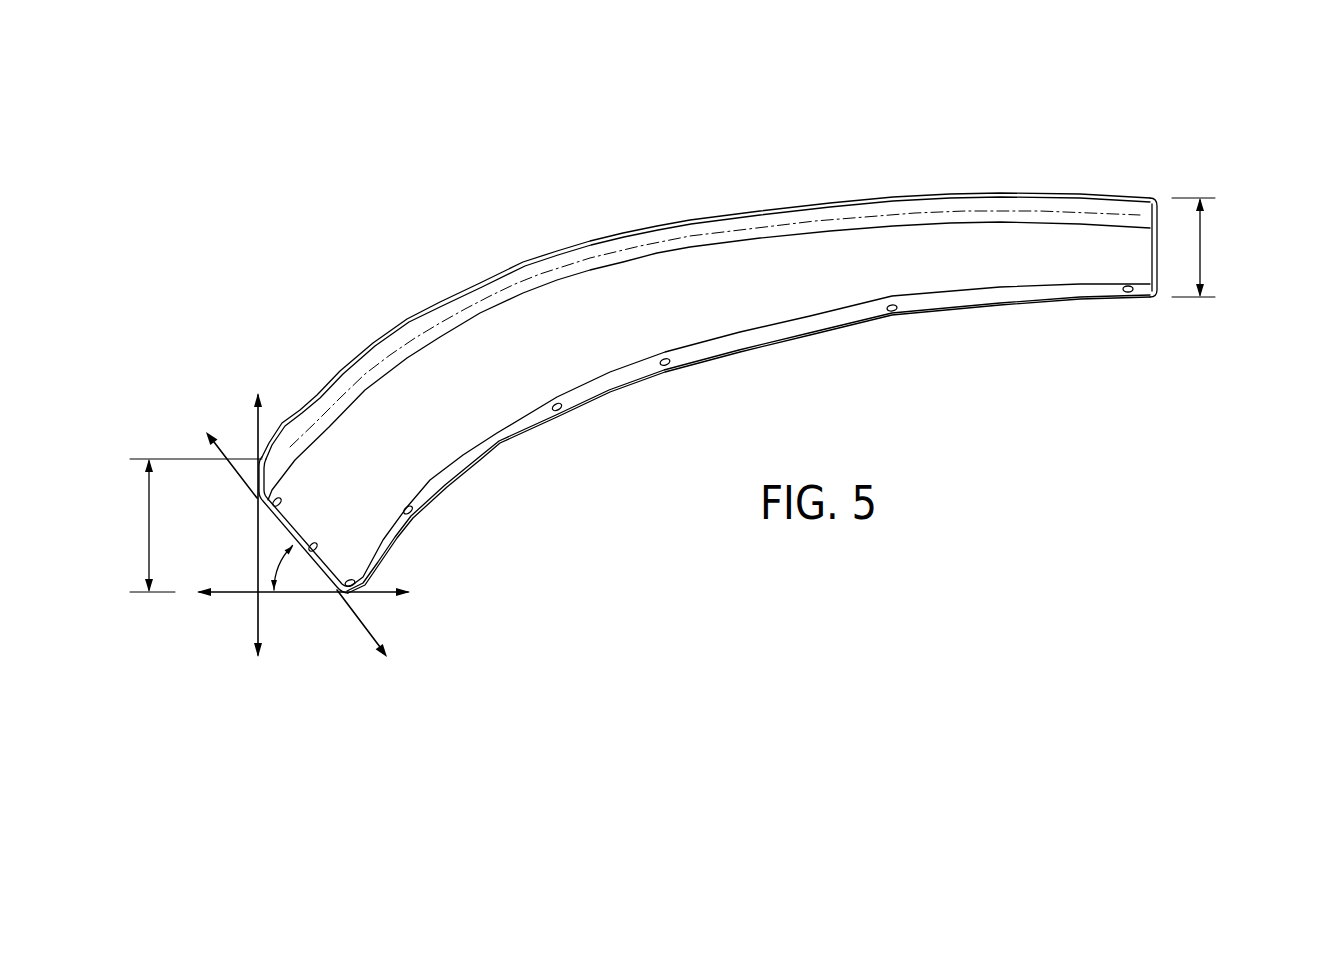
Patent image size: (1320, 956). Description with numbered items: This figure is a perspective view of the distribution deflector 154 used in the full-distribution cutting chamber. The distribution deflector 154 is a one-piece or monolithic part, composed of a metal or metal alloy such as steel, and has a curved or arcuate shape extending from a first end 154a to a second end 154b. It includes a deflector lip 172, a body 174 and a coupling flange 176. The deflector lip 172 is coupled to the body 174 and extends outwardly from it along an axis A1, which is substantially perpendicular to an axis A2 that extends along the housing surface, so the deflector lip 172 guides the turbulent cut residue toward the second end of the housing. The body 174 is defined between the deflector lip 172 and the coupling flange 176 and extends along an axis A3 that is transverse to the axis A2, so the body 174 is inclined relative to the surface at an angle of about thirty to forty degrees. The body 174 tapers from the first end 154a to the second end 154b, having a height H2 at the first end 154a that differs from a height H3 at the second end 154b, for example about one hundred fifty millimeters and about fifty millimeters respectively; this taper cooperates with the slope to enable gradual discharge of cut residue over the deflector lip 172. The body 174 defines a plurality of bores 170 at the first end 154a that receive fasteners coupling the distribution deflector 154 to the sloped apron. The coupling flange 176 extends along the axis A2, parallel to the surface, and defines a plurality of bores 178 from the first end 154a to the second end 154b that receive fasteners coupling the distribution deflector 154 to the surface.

The distribution deflector 154 is at (1063, 82).
The first end of the distribution deflector 154a is at (259, 476).
The second end of the distribution deflector 154b is at (1154, 198).
The plurality of bores 170 is at (281, 500).
The deflector lip 172 is at (862, 196).
The body 174 is at (602, 266).
The coupling flange 176 is at (752, 357).
The plurality of bores 178 is at (412, 512).
The height H2 is at (196, 525).
The height H3 is at (1203, 250).
The axis A1 is at (258, 606).
The axis A2 is at (378, 598).
The axis A3 is at (361, 629).